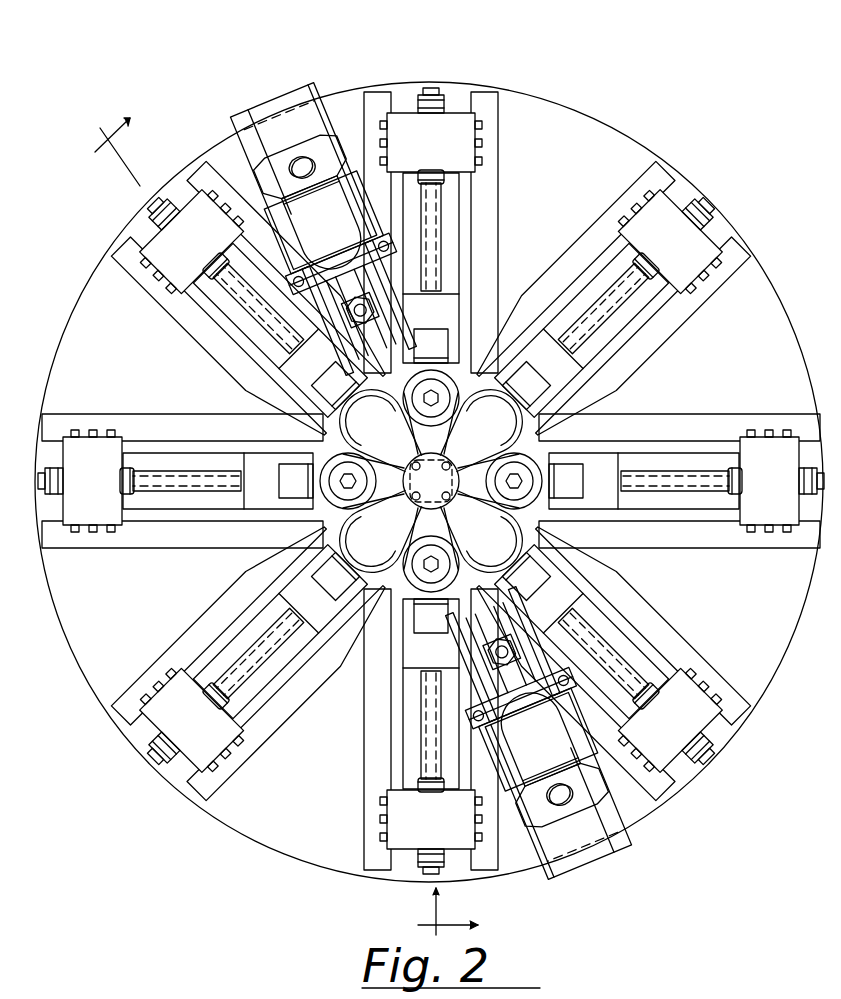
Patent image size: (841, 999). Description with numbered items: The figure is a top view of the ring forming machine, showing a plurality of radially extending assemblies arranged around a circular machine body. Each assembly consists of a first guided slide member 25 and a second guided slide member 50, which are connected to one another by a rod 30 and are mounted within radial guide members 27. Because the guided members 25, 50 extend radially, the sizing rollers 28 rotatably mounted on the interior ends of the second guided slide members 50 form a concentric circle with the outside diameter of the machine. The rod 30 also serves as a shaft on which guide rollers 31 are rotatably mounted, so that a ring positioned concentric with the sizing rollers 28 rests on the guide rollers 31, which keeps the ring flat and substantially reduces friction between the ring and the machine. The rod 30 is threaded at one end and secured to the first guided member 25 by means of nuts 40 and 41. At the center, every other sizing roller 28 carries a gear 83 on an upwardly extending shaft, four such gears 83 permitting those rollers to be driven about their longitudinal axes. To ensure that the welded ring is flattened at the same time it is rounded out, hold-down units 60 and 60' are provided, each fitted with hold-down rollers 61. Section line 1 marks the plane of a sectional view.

The section line 1 is at (294, 520).
The first guided slide member 25 is at (448, 118).
The radial guide member 27 is at (670, 660).
The sizing roller 28 is at (472, 362).
The rod 30 is at (430, 92).
The guide roller 31 is at (437, 340).
The nut 40 is at (440, 175).
The nut 41 is at (413, 100).
The second guided slide member 50 is at (600, 458).
The hold-down unit 60 is at (538, 745).
The hold-down unit 60' is at (327, 222).
The hold-down roller 61 is at (358, 328).
The gear 83 is at (365, 488).